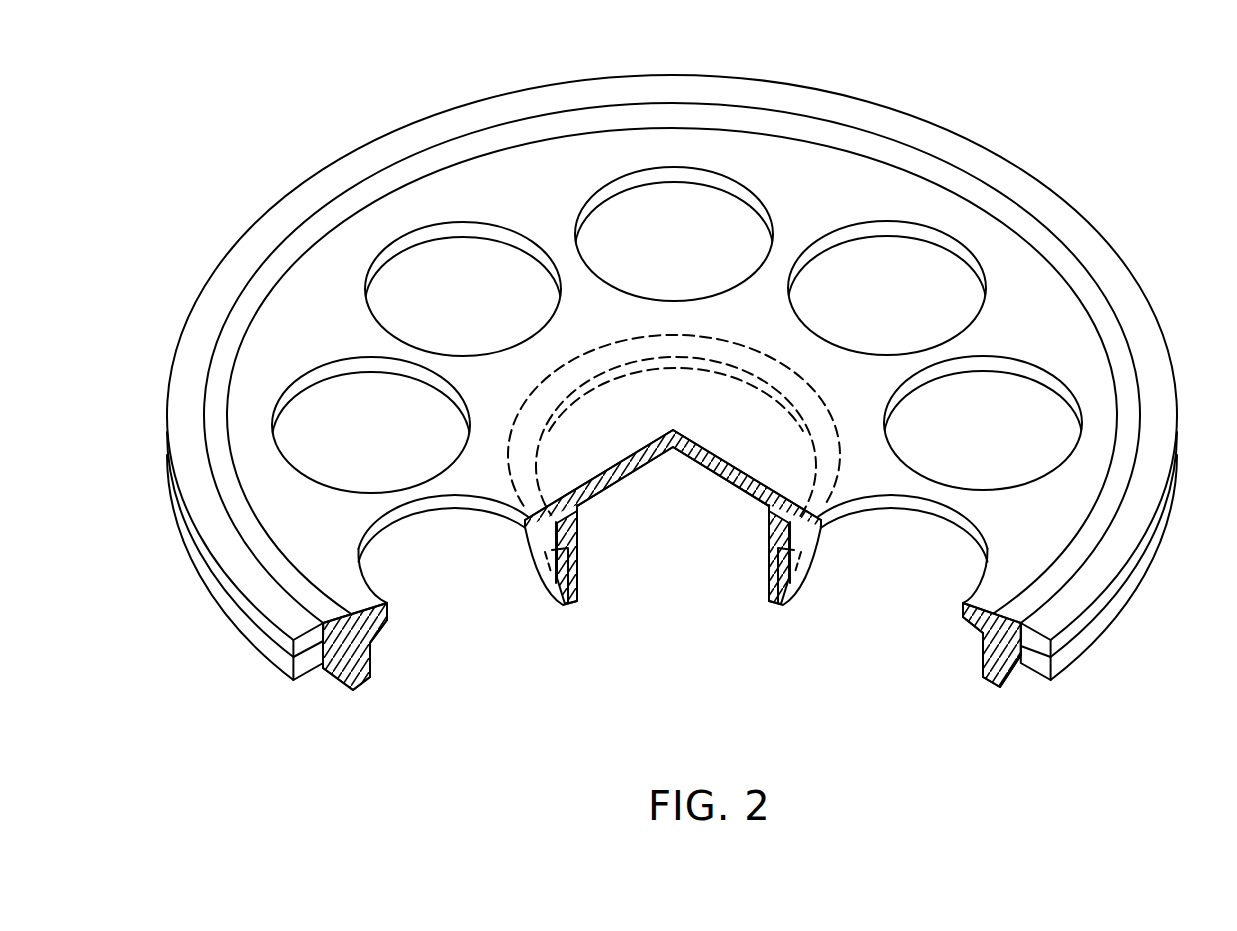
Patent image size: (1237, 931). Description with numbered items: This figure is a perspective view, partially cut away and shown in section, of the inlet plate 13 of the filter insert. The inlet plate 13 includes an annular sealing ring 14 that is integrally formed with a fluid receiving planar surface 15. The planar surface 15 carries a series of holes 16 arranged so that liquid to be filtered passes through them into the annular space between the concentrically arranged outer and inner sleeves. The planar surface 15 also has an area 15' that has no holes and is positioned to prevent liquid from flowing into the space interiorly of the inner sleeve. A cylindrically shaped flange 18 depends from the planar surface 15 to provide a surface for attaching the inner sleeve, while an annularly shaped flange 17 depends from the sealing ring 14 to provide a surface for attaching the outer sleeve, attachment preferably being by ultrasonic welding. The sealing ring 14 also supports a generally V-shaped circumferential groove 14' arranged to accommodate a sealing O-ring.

The inlet plate 13 is at (1061, 140).
The annular sealing ring 14 is at (672, 348).
The circumferential groove 14' is at (672, 568).
The fluid receiving planar surface 15 is at (743, 337).
The area without holes 15' is at (674, 428).
The holes 16 is at (387, 328).
The annularly shaped flange 17 is at (352, 682).
The cylindrically shaped flange 18 is at (553, 571).